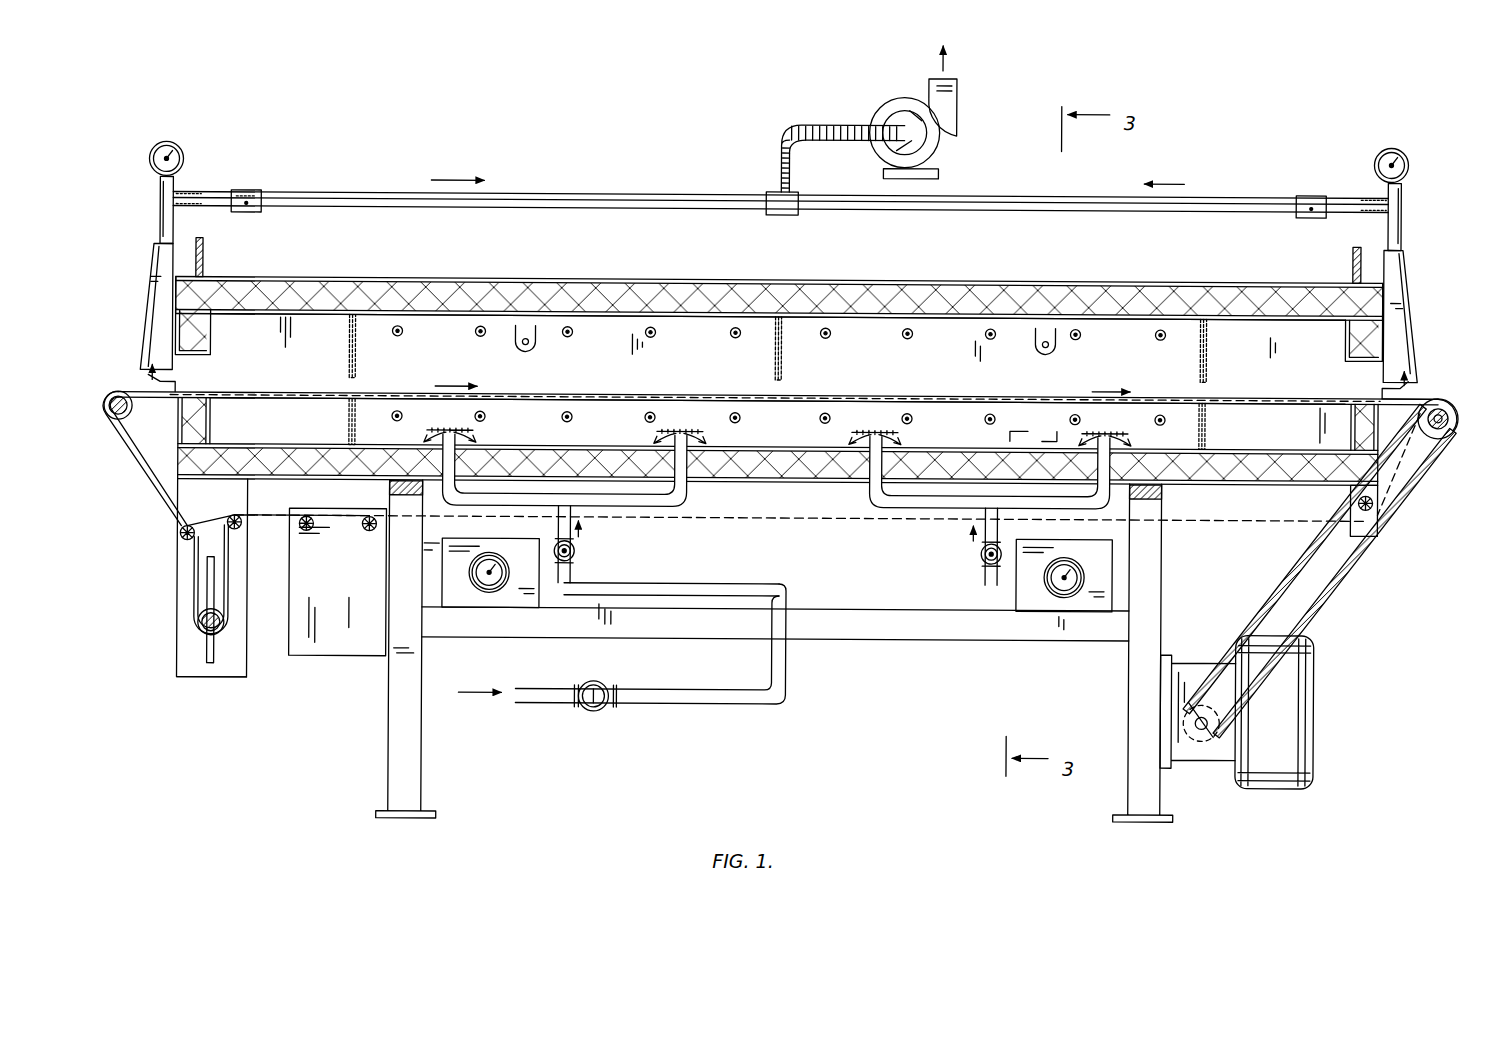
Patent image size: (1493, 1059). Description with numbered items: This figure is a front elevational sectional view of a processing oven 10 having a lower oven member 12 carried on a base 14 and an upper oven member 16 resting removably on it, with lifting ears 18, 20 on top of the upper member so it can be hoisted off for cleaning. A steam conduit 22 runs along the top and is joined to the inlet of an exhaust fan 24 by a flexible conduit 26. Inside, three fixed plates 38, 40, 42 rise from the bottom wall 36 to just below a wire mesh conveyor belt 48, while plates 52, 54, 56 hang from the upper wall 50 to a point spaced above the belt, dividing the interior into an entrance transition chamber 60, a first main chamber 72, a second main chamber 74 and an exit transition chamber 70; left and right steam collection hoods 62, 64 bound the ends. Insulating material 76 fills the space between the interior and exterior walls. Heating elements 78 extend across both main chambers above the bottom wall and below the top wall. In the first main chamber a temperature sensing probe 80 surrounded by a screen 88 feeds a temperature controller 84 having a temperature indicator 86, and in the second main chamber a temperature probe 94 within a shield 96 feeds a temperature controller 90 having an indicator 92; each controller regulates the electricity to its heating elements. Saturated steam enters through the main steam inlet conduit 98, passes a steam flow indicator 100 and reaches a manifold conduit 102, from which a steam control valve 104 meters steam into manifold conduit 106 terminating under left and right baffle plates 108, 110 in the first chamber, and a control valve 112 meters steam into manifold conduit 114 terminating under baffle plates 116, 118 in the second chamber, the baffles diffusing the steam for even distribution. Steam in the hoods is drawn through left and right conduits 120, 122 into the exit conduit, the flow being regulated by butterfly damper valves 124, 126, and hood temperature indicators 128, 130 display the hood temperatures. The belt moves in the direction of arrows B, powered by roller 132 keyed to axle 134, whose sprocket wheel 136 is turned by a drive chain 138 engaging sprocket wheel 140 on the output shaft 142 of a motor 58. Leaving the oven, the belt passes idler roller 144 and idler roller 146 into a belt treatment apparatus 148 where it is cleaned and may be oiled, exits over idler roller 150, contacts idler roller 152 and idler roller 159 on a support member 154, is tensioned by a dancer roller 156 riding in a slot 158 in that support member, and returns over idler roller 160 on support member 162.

The processing oven 10 is at (562, 118).
The lower oven member 12 is at (1235, 484).
The base 14 is at (940, 638).
The upper oven member 16 is at (778, 376).
The lifting ear 18 is at (205, 242).
The lifting ear 20 is at (1350, 248).
The steam conduit 22 is at (622, 198).
The exhaust fan 24 is at (950, 118).
The flexible conduit 26 is at (814, 124).
The bottom wall 36 is at (1285, 440).
The fixed plate 38 is at (349, 418).
The fixed plate 40 is at (778, 426).
The fixed plate 42 is at (1205, 436).
The conveyor belt 48 is at (634, 396).
The upper wall 50 is at (892, 318).
The plate 52 is at (349, 352).
The plate 54 is at (775, 350).
The plate 56 is at (1200, 362).
The motor 58 is at (1313, 740).
The entrance transition chamber 60 is at (280, 368).
The left steam collection hood 62 is at (150, 296).
The right steam collection hood 64 is at (1408, 326).
The exit transition chamber 70 is at (1262, 362).
The first main chamber 72 is at (612, 360).
The second main chamber 74 is at (952, 366).
The insulating material 76 is at (658, 290).
The heating elements 78 is at (397, 338).
The temperature sensing probe 80 is at (513, 352).
The temperature controller 84 is at (522, 600).
The temperature indicator 86 is at (475, 578).
The screen 88 is at (524, 348).
The temperature controller 90 is at (1030, 605).
The temperature indicator 92 is at (1080, 570).
The temperature probe 94 is at (1038, 348).
The shield 96 is at (1045, 350).
The main steam inlet conduit 98 is at (750, 705).
The steam flow indicator 100 is at (595, 712).
The manifold conduit 102 is at (718, 584).
The steam control valve 104 is at (578, 556).
The manifold conduit 106 is at (645, 505).
The left baffle plate 108 is at (452, 428).
The right baffle plate 110 is at (681, 428).
The control valve 112 is at (980, 556).
The manifold conduit 114 is at (915, 505).
The left baffle plate 116 is at (877, 428).
The right baffle plate 118 is at (1105, 428).
The left conduit 120 is at (158, 216).
The right conduit 122 is at (1400, 226).
The left butterfly damper valve 124 is at (250, 192).
The right butterfly damper valve 126 is at (1310, 192).
The left hood temperature indicator 128 is at (178, 148).
The right hood temperature indicator 130 is at (1405, 160).
The roller 132 is at (1445, 433).
The axle 134 is at (1450, 402).
The sprocket wheel 136 is at (1438, 405).
The drive chain 138 is at (1338, 586).
The sprocket wheel 140 is at (1201, 740).
The output shaft 142 is at (1206, 712).
The idler roller 144 is at (1378, 532).
The idler roller 146 is at (368, 534).
The belt treatment apparatus 148 is at (335, 658).
The idler roller 150 is at (309, 534).
The idler roller 152 is at (242, 532).
The support member 154 is at (200, 680).
The dancer roller 156 is at (199, 628).
The slot 158 is at (208, 590).
The idler roller 159 is at (180, 534).
The idler roller 160 is at (110, 425).
The support member 162 is at (140, 450).
The directional arrows B is at (1098, 380).